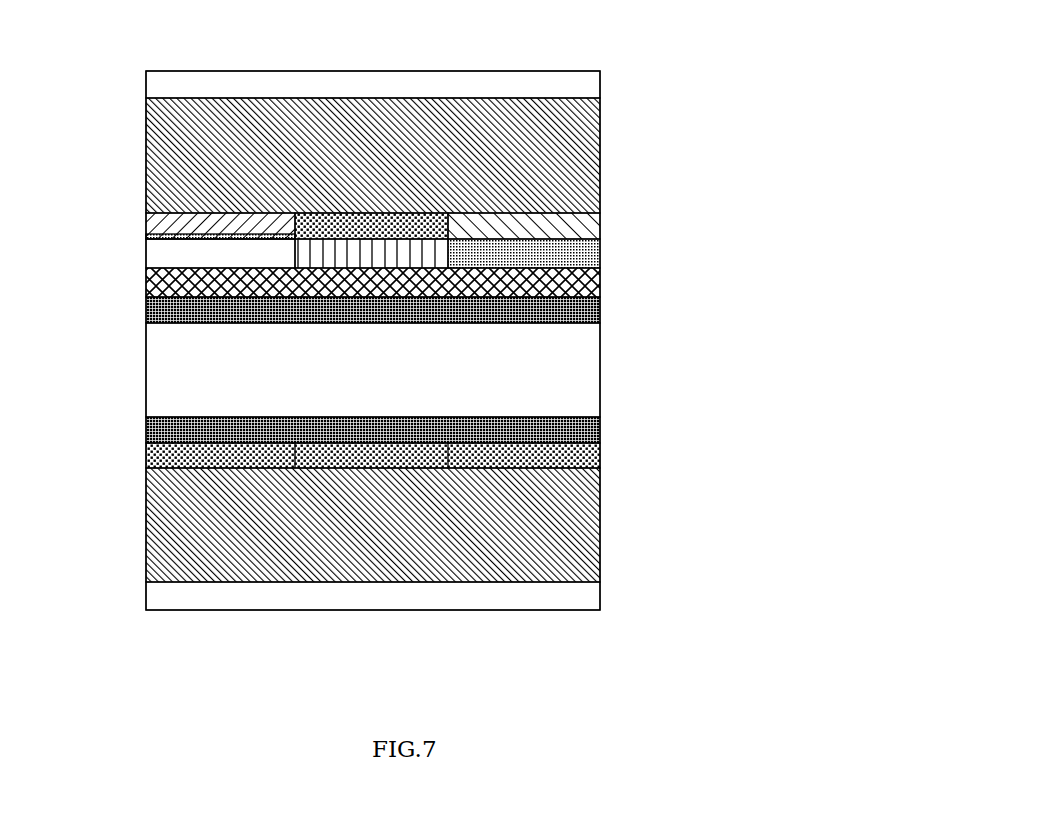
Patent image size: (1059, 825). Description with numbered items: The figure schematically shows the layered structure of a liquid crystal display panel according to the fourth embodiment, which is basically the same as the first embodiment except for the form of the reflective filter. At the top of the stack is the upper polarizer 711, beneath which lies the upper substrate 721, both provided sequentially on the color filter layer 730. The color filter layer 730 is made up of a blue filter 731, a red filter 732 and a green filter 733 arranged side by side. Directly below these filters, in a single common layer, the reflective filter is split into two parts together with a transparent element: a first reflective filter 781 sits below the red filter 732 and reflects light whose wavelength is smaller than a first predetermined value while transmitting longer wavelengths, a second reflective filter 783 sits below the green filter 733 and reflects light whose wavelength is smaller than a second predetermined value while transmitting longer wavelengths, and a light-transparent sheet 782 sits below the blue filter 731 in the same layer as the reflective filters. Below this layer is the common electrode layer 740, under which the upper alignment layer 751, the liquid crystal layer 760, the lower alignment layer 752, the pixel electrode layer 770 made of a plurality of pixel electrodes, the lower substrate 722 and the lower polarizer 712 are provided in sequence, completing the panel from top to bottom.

The upper polarizer 711 is at (600, 85).
The lower polarizer 712 is at (600, 597).
The upper substrate 721 is at (600, 183).
The lower substrate 722 is at (600, 517).
The color filter layer 730 is at (600, 232).
The blue filter 731 is at (147, 220).
The red filter 732 is at (147, 234).
The green filter 733 is at (600, 214).
The common electrode layer 740 is at (600, 287).
The upper alignment layer 751 is at (600, 317).
The lower alignment layer 752 is at (600, 428).
The liquid crystal layer 760 is at (600, 380).
The pixel electrode layer 770 is at (145, 448).
The first reflective filter 781 is at (423, 261).
The light-transparent sheet 782 is at (220, 261).
The second reflective filter 783 is at (600, 250).